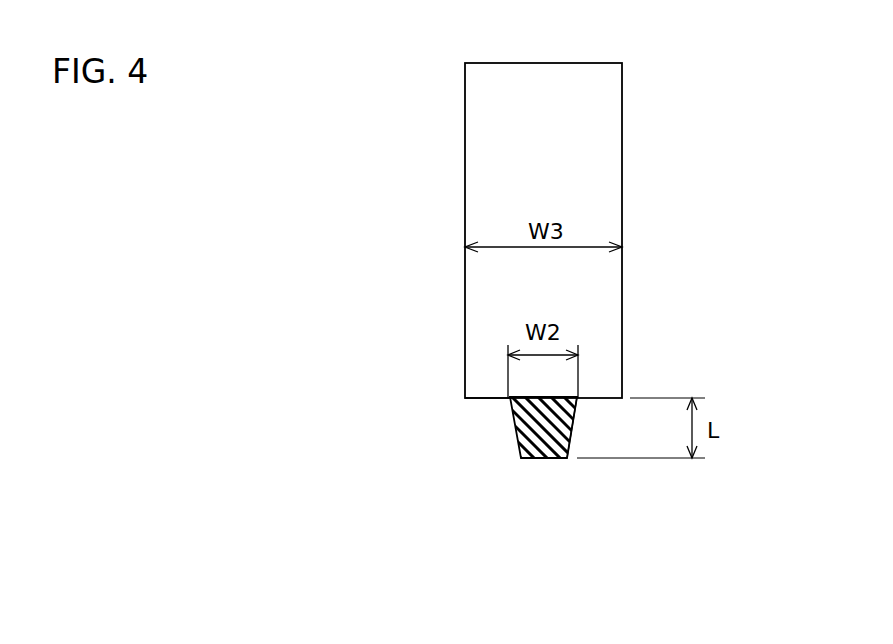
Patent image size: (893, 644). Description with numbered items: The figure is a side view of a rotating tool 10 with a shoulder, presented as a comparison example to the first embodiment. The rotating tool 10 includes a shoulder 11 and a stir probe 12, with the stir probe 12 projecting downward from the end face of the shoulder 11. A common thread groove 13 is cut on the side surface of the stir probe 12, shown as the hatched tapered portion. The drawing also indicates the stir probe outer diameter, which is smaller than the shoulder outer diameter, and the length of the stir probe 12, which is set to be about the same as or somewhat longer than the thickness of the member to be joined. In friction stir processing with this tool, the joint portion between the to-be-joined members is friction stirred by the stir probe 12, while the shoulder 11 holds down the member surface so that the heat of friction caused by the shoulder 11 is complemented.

The rotating tool 10 is at (622, 123).
The shoulder 11 is at (487, 398).
The stir probe 12 is at (517, 453).
The thread groove 13 is at (558, 430).